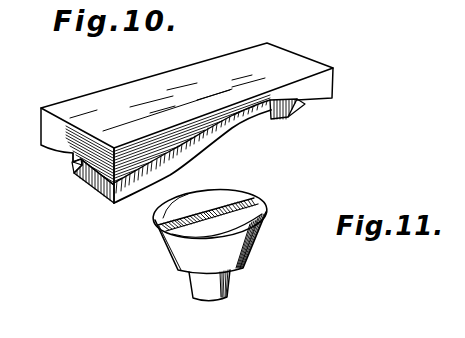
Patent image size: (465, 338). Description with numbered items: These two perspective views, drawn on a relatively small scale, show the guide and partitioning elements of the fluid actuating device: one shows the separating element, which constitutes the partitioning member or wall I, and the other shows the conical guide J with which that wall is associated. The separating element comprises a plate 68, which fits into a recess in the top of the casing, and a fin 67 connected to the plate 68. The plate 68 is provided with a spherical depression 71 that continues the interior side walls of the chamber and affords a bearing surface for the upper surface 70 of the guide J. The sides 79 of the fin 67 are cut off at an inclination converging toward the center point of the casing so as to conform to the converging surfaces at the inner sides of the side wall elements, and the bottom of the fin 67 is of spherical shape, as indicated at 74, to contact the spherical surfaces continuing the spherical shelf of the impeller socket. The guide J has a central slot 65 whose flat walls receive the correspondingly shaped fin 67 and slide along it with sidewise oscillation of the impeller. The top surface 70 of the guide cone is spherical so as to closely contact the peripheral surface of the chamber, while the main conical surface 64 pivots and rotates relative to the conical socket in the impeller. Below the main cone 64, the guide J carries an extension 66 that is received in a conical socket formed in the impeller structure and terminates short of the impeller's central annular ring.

In FIG. 10, the plate 68 is at (296, 62).
In FIG. 10, the spherical bottom of fin 74 is at (212, 141).
In FIG. 10, the fin 67 is at (100, 190).
In FIG. 10, the sides of the fin 79 is at (88, 185).
In FIG. 10, the spherical depression 71 is at (271, 115).
In FIG. 10, the partitioning member or wall I is at (72, 164).
In FIG. 11, the central slot 65 is at (255, 200).
In FIG. 11, the top surface of the guide cone 70 is at (252, 220).
In FIG. 11, the conical surface 64 is at (262, 252).
In FIG. 11, the extension 66 is at (220, 290).
In FIG. 11, the conical guide J is at (208, 253).